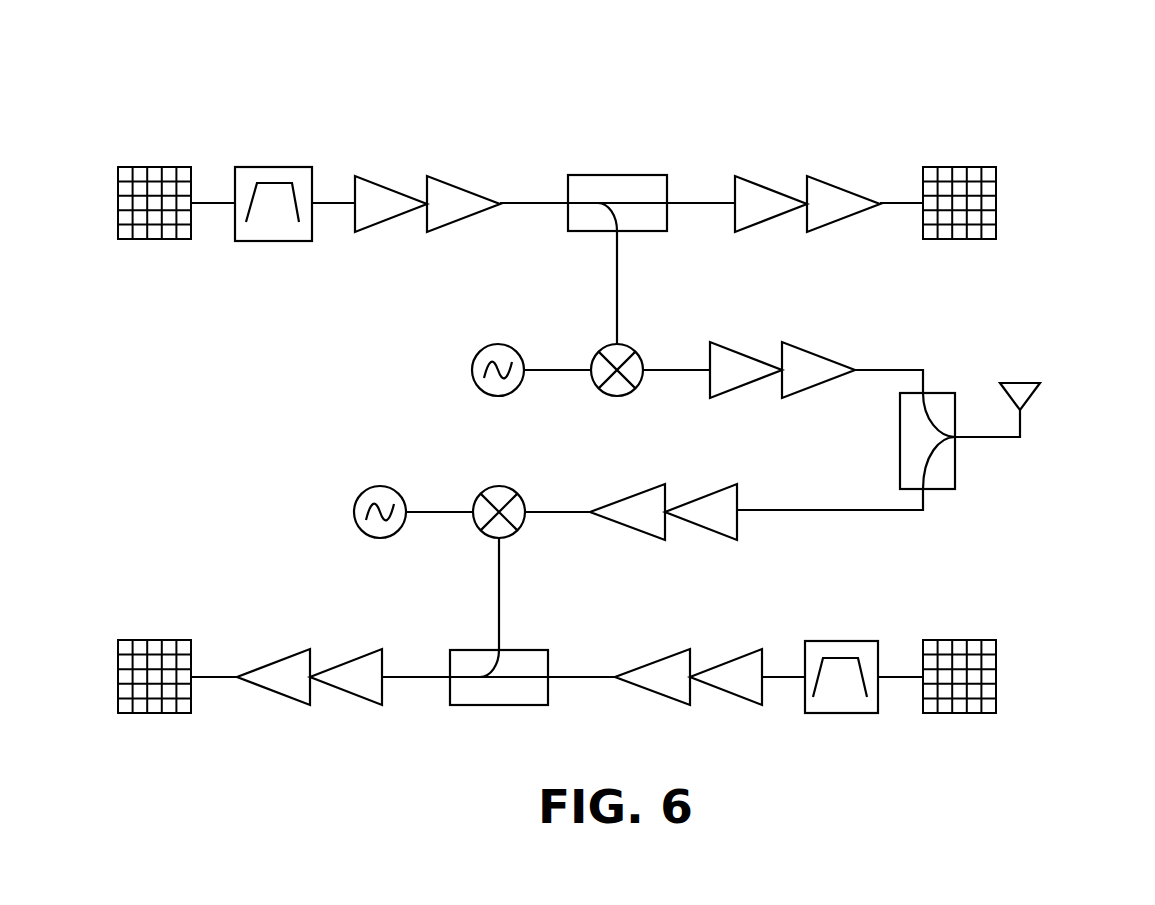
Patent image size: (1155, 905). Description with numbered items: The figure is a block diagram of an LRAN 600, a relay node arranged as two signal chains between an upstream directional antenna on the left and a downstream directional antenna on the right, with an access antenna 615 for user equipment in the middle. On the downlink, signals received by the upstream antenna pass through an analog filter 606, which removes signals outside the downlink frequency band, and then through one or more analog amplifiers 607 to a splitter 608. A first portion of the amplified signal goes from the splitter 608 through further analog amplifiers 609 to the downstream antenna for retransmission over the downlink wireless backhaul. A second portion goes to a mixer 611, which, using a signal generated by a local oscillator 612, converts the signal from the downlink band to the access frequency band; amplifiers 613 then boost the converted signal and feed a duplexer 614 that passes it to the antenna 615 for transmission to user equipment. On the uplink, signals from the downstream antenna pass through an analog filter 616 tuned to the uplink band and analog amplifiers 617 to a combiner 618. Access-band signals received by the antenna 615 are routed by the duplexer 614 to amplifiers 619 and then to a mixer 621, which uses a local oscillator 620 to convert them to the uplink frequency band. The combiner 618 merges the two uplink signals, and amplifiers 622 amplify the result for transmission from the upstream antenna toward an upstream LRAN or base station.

The LRAN 600 is at (1058, 90).
The analog filter 606 is at (272, 167).
The analog amplifiers 607 is at (427, 176).
The splitter 608 is at (617, 175).
The analog amplifiers 609 is at (807, 176).
The mixer 611 is at (612, 396).
The local oscillator 612 is at (498, 344).
The amplifiers 613 is at (782, 342).
The duplexer 614 is at (900, 440).
The antenna 615 is at (1020, 425).
The analog filter 616 is at (842, 641).
The analog amplifiers 617 is at (690, 649).
The combiner 618 is at (497, 705).
The amplifiers 619 is at (665, 484).
The local oscillator 620 is at (380, 486).
The mixer 621 is at (499, 486).
The amplifiers 622 is at (310, 649).